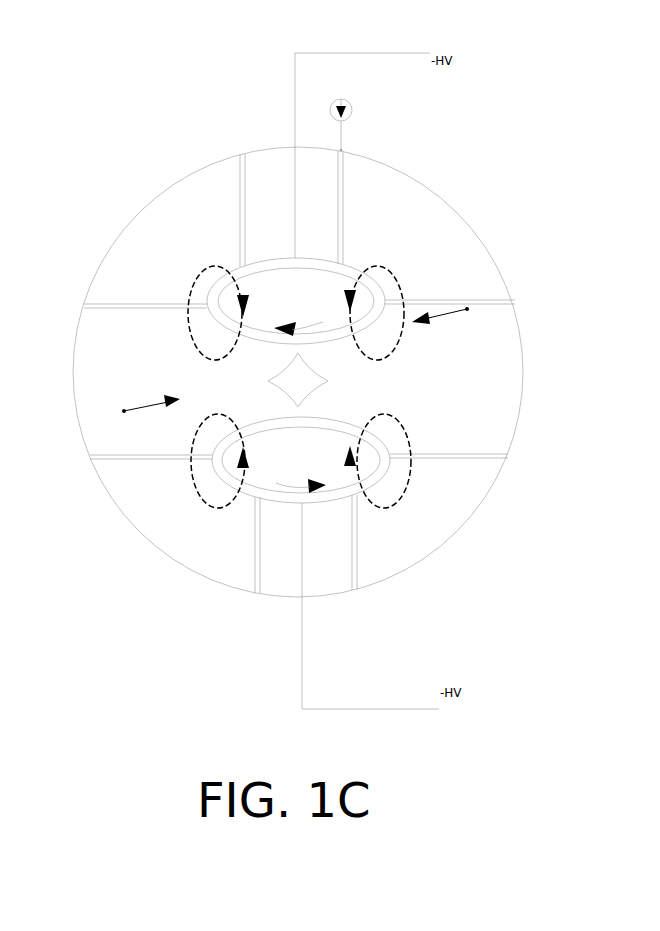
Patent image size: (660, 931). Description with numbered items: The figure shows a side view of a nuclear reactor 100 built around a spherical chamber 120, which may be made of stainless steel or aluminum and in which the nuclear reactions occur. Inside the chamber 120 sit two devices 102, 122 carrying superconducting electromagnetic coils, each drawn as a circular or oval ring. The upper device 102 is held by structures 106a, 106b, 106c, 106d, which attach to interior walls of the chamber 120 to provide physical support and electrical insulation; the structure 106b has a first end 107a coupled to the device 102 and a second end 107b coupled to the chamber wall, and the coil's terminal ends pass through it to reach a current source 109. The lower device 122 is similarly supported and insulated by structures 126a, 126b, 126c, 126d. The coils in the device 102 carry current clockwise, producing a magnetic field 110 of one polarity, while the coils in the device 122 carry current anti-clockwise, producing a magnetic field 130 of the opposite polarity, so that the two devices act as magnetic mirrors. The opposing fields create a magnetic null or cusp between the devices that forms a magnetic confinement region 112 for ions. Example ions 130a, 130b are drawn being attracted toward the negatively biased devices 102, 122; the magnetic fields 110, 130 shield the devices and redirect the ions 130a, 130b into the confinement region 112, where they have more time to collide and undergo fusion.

The nuclear reactor 100 is at (541, 84).
The device 102 is at (354, 268).
The structure 106a is at (241, 225).
The structure 106b is at (341, 222).
The structure 106c is at (177, 305).
The structure 106d is at (421, 300).
The first end 107a is at (343, 258).
The second end 107b is at (344, 150).
The current source 109 is at (351, 104).
The magnetic field 110 is at (205, 330).
The magnetic confinement region 112 is at (313, 388).
The chamber 120 is at (422, 183).
The device 122 is at (280, 503).
The structure 126a is at (168, 456).
The structure 126b is at (355, 576).
The structure 126c is at (257, 576).
The structure 126d is at (421, 453).
The magnetic field 130 is at (207, 495).
The ion 130a is at (124, 411).
The ion 130b is at (467, 311).